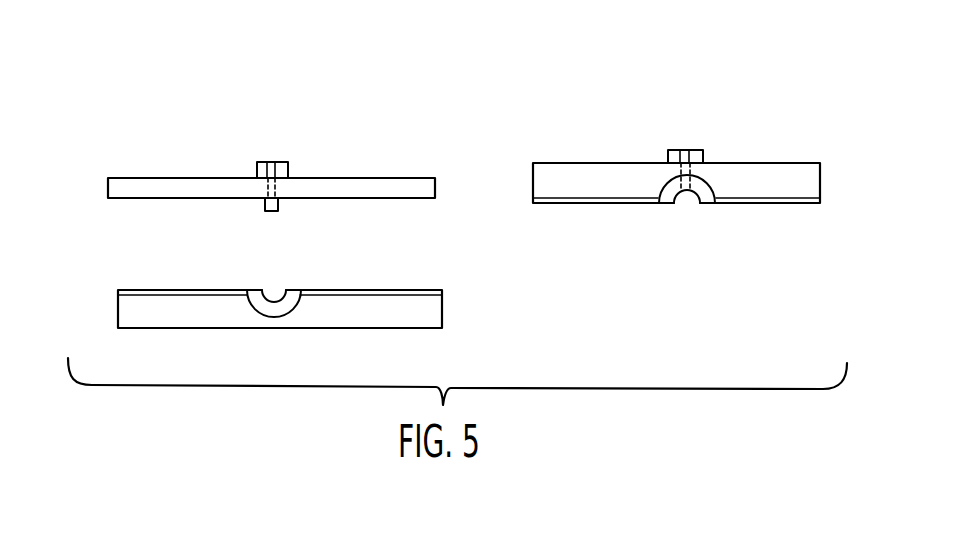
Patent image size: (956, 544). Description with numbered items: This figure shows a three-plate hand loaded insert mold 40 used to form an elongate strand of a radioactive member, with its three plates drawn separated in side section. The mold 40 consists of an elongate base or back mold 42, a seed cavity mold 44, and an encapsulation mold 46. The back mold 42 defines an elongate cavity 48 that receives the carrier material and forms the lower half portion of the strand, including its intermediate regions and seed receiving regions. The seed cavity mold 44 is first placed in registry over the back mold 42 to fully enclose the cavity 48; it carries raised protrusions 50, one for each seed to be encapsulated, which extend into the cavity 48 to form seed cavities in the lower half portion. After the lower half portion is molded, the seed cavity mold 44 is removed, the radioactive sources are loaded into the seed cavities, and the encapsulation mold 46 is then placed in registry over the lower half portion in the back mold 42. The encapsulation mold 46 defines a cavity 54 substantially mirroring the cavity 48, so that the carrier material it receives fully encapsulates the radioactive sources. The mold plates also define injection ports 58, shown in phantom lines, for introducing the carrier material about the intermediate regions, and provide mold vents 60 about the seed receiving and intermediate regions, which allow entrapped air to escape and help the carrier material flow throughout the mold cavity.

The hand loaded insert mold 40 is at (486, 92).
The back mold 42 is at (443, 308).
The seed cavity mold 44 is at (435, 179).
The encapsulation mold 46 is at (533, 177).
The elongate cavity 48 is at (254, 290).
The raised protrusion 50 is at (279, 209).
The cavity 54 is at (704, 204).
The injection port 58 is at (291, 189).
The mold vent 60 is at (436, 290).